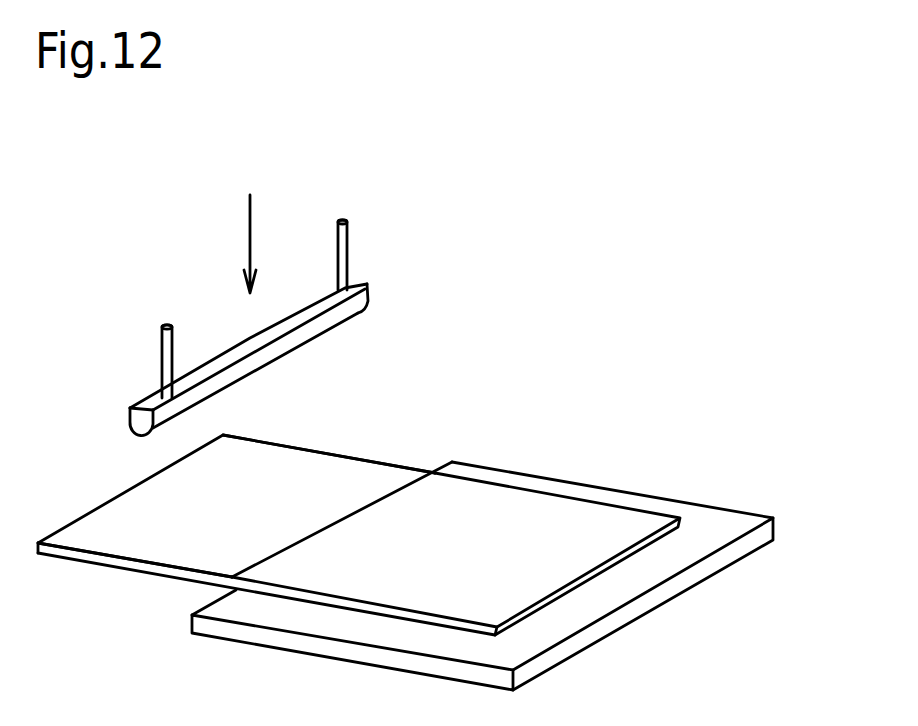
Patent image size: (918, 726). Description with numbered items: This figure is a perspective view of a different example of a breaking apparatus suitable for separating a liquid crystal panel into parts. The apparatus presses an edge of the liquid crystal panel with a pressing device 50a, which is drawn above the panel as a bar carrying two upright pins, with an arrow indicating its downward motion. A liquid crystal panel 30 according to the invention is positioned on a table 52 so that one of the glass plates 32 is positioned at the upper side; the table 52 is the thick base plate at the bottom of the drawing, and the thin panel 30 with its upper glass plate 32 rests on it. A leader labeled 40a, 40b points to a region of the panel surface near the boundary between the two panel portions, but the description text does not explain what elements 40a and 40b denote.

The pressing device 50a is at (383, 299).
The table 52 is at (700, 583).
The liquid crystal panel 30 is at (578, 571).
The glass plate 32 is at (582, 526).
The lead 40a is at (360, 503).
The lead 40b is at (236, 506).